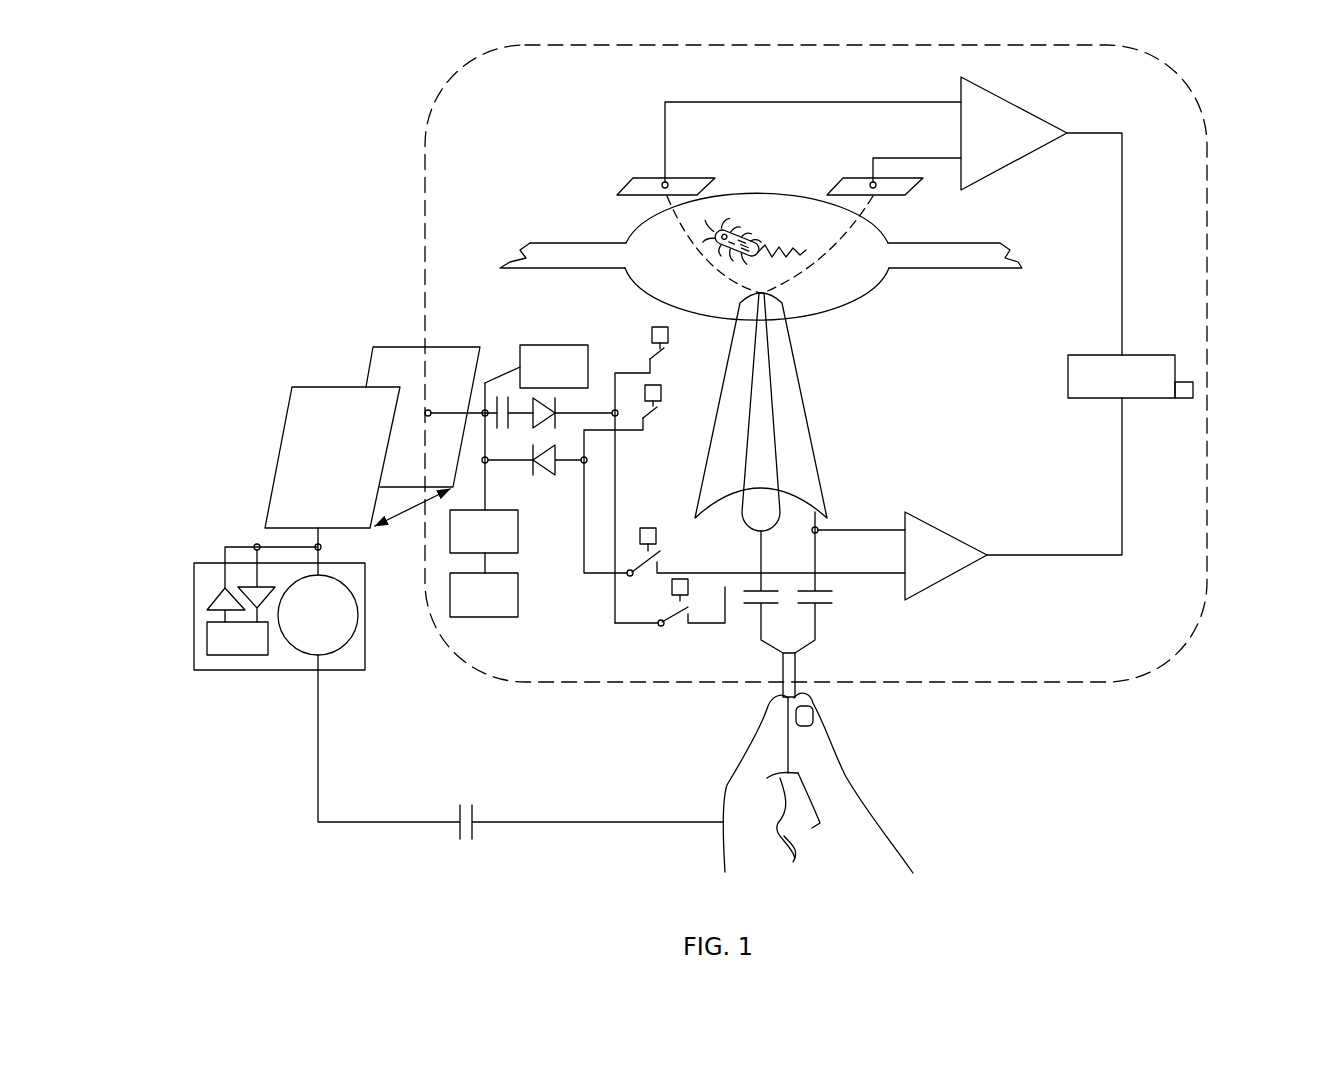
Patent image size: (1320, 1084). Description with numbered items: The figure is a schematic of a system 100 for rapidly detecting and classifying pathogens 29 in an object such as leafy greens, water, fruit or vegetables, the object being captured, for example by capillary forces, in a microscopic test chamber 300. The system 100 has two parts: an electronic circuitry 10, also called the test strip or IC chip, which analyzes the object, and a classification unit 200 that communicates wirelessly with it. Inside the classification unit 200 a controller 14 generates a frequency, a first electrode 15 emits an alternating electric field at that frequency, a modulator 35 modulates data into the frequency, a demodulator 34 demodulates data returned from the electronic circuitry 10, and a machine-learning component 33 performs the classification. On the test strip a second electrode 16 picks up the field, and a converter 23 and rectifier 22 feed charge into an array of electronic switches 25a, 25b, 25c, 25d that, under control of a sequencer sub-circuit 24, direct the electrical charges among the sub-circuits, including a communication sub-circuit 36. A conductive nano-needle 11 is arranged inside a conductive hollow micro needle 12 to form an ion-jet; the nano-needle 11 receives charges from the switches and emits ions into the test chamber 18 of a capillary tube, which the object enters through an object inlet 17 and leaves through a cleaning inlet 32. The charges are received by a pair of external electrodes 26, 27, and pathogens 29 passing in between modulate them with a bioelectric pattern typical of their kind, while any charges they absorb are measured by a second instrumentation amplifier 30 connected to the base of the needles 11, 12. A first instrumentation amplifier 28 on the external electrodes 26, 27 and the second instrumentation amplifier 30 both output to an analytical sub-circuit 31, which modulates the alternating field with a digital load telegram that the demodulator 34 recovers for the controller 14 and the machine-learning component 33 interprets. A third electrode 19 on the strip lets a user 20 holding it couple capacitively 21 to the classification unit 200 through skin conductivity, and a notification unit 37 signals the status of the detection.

The electronic circuitry 10 is at (1194, 193).
The conductive nano-needle 11 is at (764, 476).
The conductive hollow micro needle 12 is at (784, 415).
The controller 14 is at (335, 618).
The first electrode 15 is at (300, 445).
The second electrode 16 is at (402, 353).
The object inlet 17 is at (536, 250).
The test chamber 18 is at (668, 285).
The third electrode 19 is at (795, 667).
The user 20 is at (860, 826).
The capacitive coupling 21 is at (475, 808).
The rectifier 22 is at (550, 478).
The converter 23 is at (556, 357).
The sequencer sub-circuit 24 is at (508, 615).
The electronic switch 25a is at (645, 527).
The electronic switch 25b is at (676, 630).
The electronic switch 25c is at (667, 362).
The electronic switch 25d is at (657, 432).
The external electrode 26 is at (650, 184).
The external electrode 27 is at (850, 182).
The first instrumentation amplifier 28 is at (1010, 115).
The pathogens 29 is at (708, 243).
The second instrumentation amplifier 30 is at (935, 568).
The analytical sub-circuit 31 is at (1090, 368).
The cleaning inlet 32 is at (1006, 253).
The machine-learning component 33 is at (215, 645).
The demodulator 34 is at (248, 588).
The modulator 35 is at (215, 592).
The communication sub-circuit 36 is at (507, 543).
The notification unit 37 is at (1186, 385).
The system 100 is at (250, 239).
The classification unit 200 is at (287, 624).
The microscopic test chamber 300 is at (903, 312).